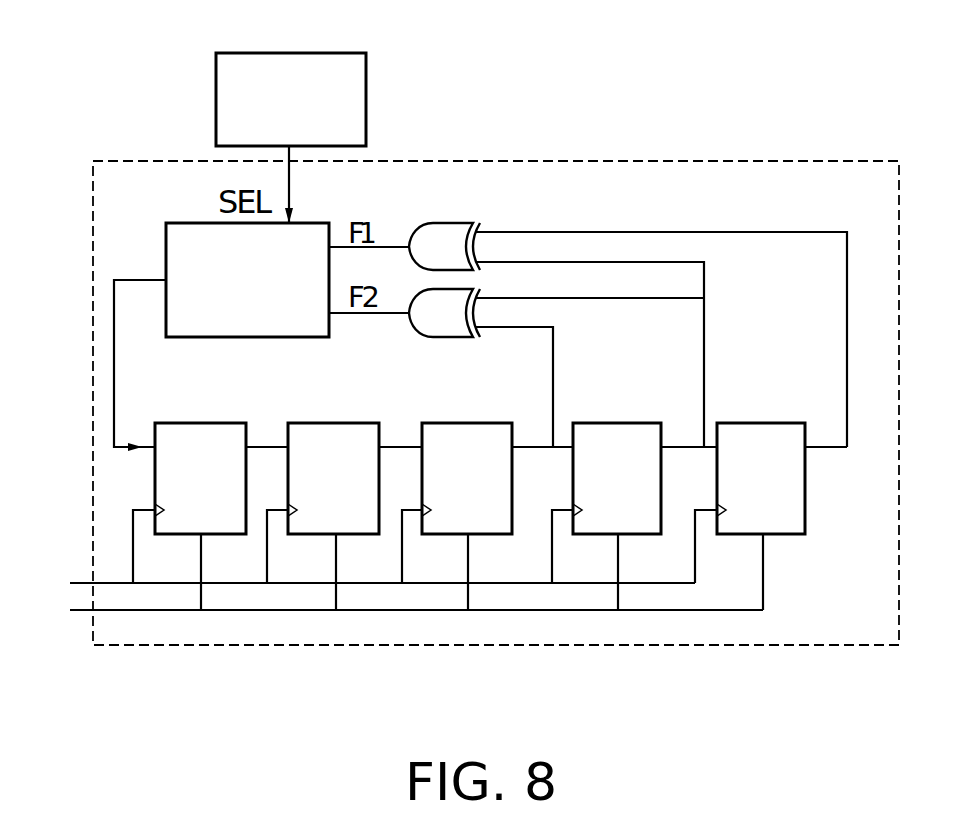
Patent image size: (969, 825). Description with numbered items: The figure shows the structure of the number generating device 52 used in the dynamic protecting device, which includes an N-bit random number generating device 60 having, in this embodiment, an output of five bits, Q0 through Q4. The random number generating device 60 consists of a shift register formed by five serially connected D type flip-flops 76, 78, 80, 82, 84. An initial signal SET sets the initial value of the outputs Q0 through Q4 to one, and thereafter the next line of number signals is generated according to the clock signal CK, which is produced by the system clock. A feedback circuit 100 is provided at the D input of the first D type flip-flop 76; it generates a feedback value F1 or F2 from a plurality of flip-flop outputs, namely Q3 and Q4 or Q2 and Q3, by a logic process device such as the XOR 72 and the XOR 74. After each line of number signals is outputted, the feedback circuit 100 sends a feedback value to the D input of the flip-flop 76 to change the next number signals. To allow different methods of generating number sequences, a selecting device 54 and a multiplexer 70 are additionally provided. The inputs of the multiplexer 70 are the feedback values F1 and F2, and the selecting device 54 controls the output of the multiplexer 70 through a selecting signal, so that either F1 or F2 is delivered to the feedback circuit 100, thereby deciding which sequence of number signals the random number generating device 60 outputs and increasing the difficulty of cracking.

The number generating device 52 is at (823, 645).
The selecting device 54 is at (318, 53).
The random number generating device 60 is at (882, 598).
The multiplexer 70 is at (318, 223).
The XOR 72 is at (443, 222).
The XOR 74 is at (443, 338).
The D type flip-flop 76 is at (223, 423).
The D type flip-flop 78 is at (356, 423).
The D type flip-flop 80 is at (489, 423).
The D type flip-flop 82 is at (640, 423).
The D type flip-flop 84 is at (785, 423).
The feedback circuit 100 is at (133, 278).